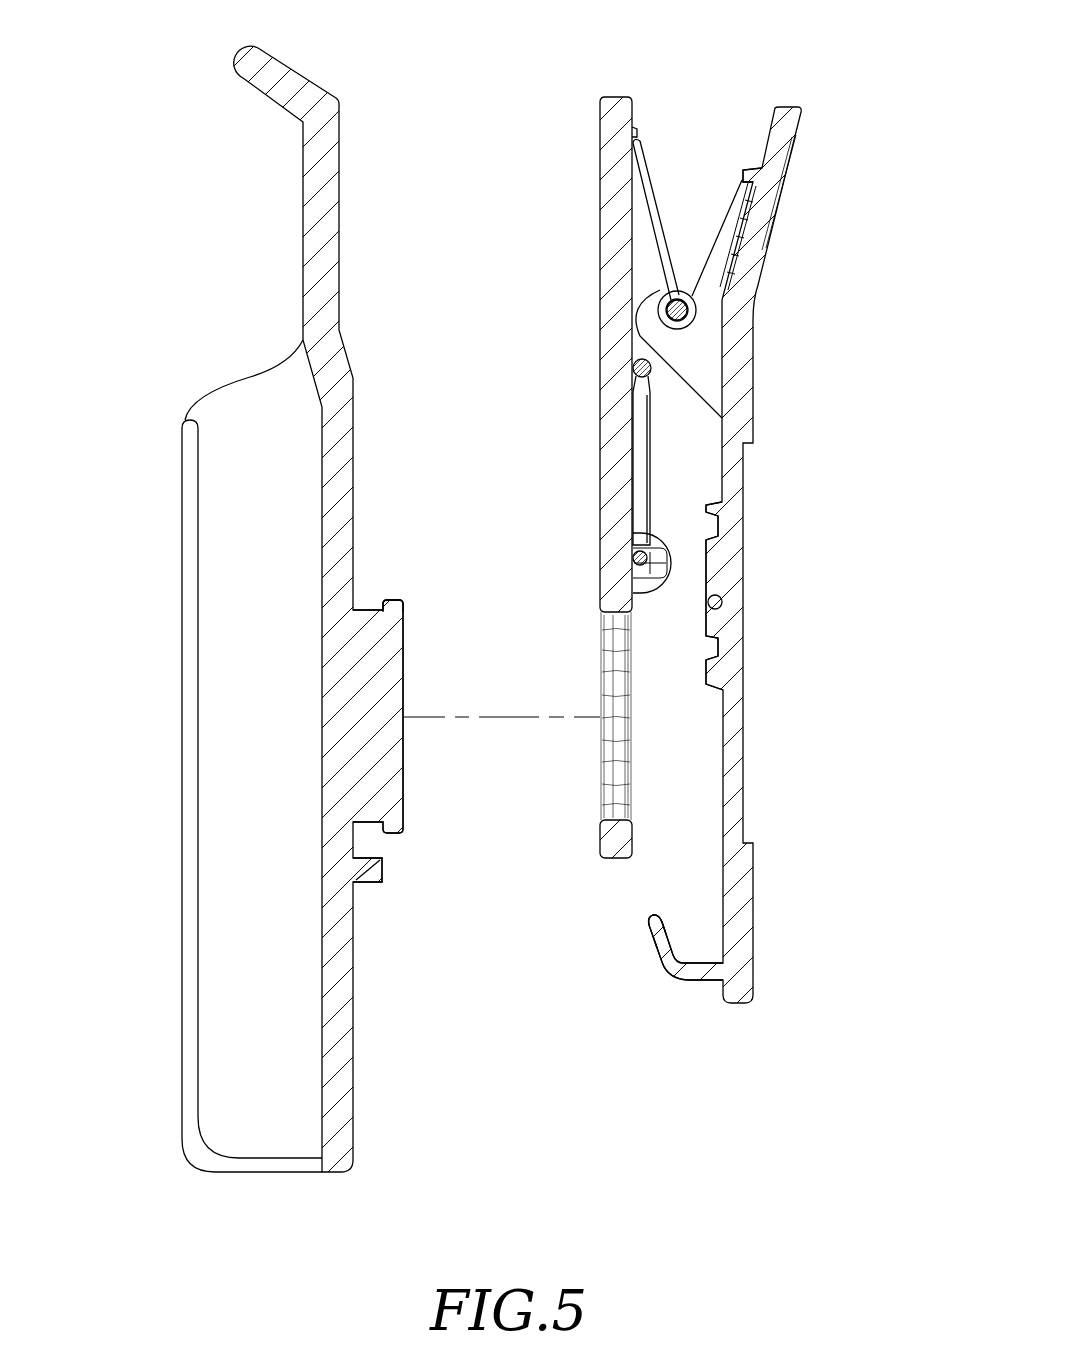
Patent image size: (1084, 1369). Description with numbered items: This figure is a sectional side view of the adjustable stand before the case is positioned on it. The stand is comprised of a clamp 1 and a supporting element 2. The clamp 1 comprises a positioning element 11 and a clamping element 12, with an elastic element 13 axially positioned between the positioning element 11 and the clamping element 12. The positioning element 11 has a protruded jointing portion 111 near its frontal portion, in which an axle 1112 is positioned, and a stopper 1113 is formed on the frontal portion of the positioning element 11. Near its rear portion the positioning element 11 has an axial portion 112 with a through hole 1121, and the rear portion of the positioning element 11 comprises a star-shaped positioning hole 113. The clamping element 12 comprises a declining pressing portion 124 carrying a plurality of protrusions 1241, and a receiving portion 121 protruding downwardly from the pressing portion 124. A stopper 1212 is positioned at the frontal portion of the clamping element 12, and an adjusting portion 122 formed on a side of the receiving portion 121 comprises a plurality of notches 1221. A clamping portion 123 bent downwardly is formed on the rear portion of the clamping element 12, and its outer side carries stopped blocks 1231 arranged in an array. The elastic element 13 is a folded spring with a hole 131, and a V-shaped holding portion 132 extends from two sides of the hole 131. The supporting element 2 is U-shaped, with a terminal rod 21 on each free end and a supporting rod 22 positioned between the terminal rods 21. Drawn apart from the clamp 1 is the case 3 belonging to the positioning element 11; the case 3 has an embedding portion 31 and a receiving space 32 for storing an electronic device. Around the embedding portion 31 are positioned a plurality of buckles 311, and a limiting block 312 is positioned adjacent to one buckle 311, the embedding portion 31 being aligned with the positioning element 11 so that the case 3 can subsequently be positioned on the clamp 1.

The clamp 1 is at (693, 520).
The positioning element 11 is at (615, 454).
The jointing portion 111 is at (642, 262).
The axle 1112 is at (678, 298).
The stopper 1113 is at (638, 128).
The axial portion 112 is at (660, 542).
The through hole 1121 is at (615, 570).
The positioning hole 113 is at (612, 828).
The clamping element 12 is at (699, 547).
The receiving portion 121 is at (644, 312).
The stopper 1212 is at (750, 167).
The adjusting portion 122 is at (712, 567).
The notch 1221 is at (722, 605).
The clamping portion 123 is at (693, 972).
The stopped block 1231 is at (640, 957).
The pressing portion 124 is at (795, 184).
The protrusion 1241 is at (768, 250).
The elastic element 13 is at (738, 251).
The hole 131 is at (698, 312).
The holding portion 132 is at (640, 142).
The supporting element 2 is at (595, 454).
The terminal rod 21 is at (640, 557).
The supporting rod 22 is at (634, 370).
The case 3 is at (291, 609).
The embedding portion 31 is at (398, 680).
The buckle 311 is at (392, 600).
The limiting block 312 is at (384, 874).
The receiving space 32 is at (262, 410).